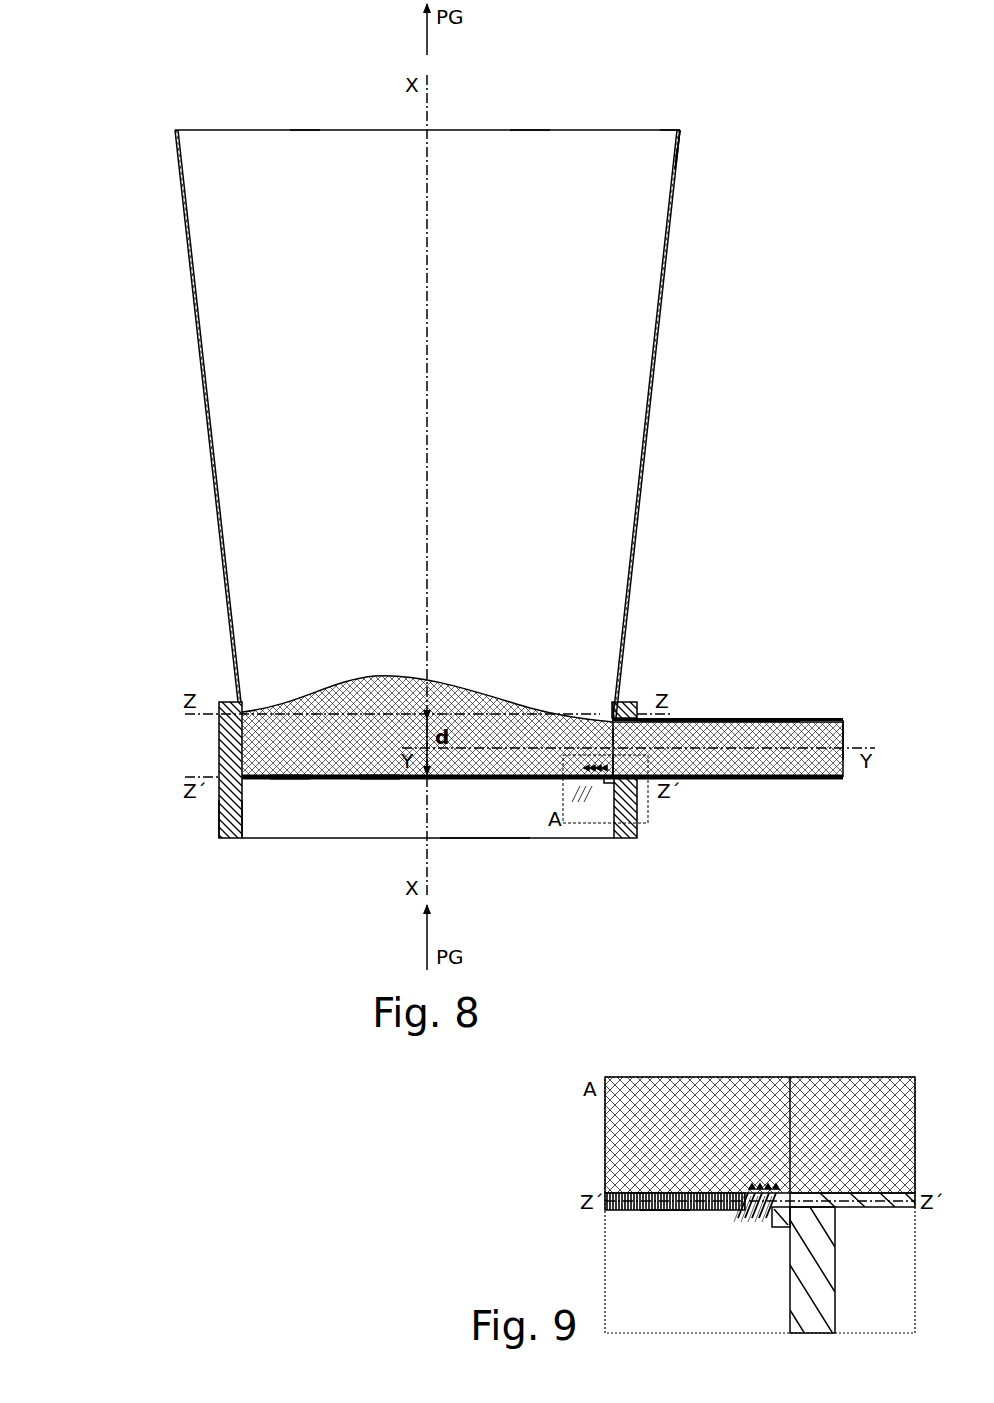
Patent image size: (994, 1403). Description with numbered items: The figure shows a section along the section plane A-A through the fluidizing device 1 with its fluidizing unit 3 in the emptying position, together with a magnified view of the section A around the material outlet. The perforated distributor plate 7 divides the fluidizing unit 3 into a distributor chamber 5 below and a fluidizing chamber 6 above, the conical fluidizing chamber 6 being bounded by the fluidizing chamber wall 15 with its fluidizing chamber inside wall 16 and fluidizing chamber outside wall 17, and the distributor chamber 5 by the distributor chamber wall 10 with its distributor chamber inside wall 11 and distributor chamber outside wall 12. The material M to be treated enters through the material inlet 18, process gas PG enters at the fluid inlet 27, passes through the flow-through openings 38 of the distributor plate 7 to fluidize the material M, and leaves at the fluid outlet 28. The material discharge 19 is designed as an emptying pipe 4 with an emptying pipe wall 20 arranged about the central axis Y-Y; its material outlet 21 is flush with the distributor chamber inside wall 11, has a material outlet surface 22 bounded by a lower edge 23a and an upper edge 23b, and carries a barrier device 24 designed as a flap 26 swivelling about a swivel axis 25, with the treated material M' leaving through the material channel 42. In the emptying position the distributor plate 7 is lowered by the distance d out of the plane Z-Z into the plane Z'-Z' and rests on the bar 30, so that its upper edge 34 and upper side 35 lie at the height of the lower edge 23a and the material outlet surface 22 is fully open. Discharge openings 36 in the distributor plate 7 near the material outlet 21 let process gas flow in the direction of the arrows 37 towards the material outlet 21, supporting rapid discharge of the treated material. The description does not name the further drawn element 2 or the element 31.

In FIG. 8, the fluidizing device 1 is at (798, 86).
In FIG. 8, the container 2 is at (96, 350).
In FIG. 8, the fluidizing unit 3 is at (678, 521).
In FIG. 8, the emptying pipe 4 is at (802, 779).
In FIG. 8, the distributor chamber 5 is at (155, 788).
In FIG. 8, the fluidizing chamber 6 is at (668, 262).
In FIG. 8, the perforated distributor plate 7 is at (322, 781).
In FIG. 9, the perforated distributor plate 7 is at (669, 1186).
In FIG. 8, the distributor chamber wall 10 is at (230, 841).
In FIG. 8, the distributor chamber inside wall 11 is at (244, 830).
In FIG. 8, the distributor chamber outside wall 12 is at (217, 830).
In FIG. 8, the fluidizing chamber wall 15 is at (680, 160).
In FIG. 8, the fluidizing chamber inside wall 16 is at (670, 150).
In FIG. 8, the fluidizing chamber outside wall 17 is at (682, 136).
In FIG. 8, the material inlet 18 is at (305, 129).
In FIG. 8, the material discharge 19 is at (784, 718).
In FIG. 8, the emptying pipe wall 20 is at (843, 721).
In FIG. 8, the material outlet 21 is at (655, 729).
In FIG. 8, the material outlet surface 22 is at (606, 734).
In FIG. 8, the lower edge of the material outlet 23a is at (638, 822).
In FIG. 9, the lower edge of the material outlet 23a is at (797, 1199).
In FIG. 8, the upper edge of the material outlet 23b is at (623, 705).
In FIG. 8, the barrier device 24 is at (642, 722).
In FIG. 8, the swivel axis 25 is at (609, 718).
In FIG. 8, the flap 26 is at (617, 740).
In FIG. 8, the fluid inlet 27 is at (486, 850).
In FIG. 8, the fluid outlet 28 is at (530, 129).
In FIG. 8, the bar 30 is at (607, 783).
In FIG. 9, the bar 30 is at (794, 1196).
In FIG. 8, the plate inner region 31 is at (613, 777).
In FIG. 8, the upper edge of the distributor plate 34 is at (618, 786).
In FIG. 9, the upper edge of the distributor plate 34 is at (791, 1194).
In FIG. 8, the upper side of the distributor plate 35 is at (291, 777).
In FIG. 9, the upper side of the distributor plate 35 is at (646, 1194).
In FIG. 8, the discharge opening 36 is at (590, 782).
In FIG. 9, the discharge opening 36 is at (735, 1194).
In FIG. 8, the arrows 37 is at (574, 774).
In FIG. 9, the arrows 37 is at (764, 1230).
In FIG. 8, the flow-through openings 38 is at (377, 781).
In FIG. 9, the flow-through openings 38 is at (664, 1213).
In FIG. 8, the material channel 42 is at (840, 741).
In FIG. 8, the material to be treated M is at (292, 737).